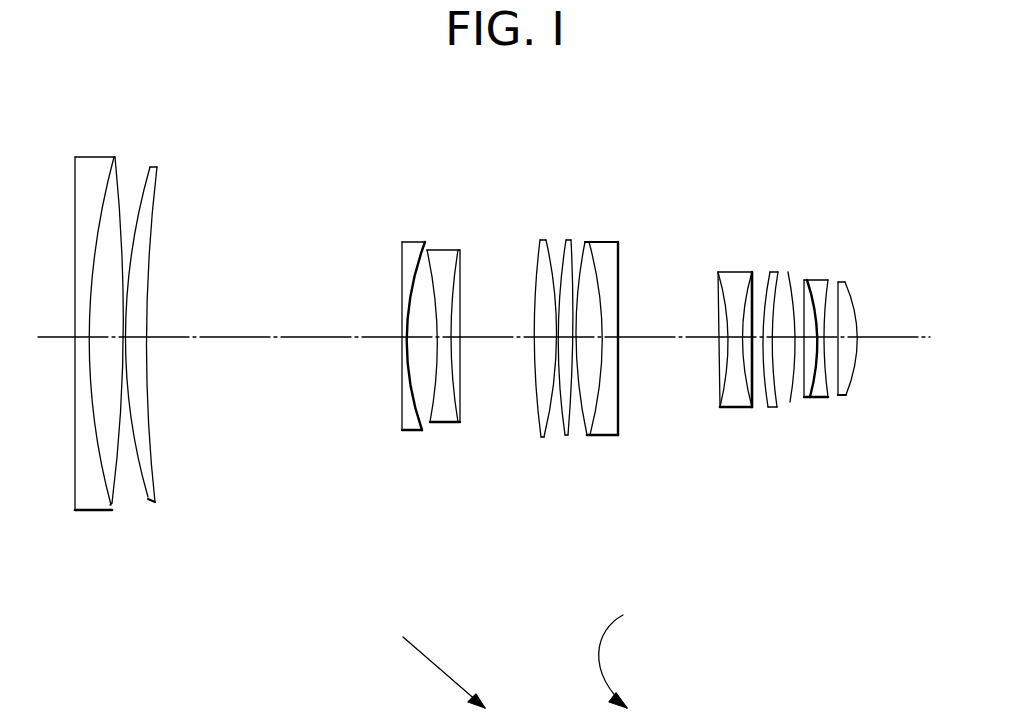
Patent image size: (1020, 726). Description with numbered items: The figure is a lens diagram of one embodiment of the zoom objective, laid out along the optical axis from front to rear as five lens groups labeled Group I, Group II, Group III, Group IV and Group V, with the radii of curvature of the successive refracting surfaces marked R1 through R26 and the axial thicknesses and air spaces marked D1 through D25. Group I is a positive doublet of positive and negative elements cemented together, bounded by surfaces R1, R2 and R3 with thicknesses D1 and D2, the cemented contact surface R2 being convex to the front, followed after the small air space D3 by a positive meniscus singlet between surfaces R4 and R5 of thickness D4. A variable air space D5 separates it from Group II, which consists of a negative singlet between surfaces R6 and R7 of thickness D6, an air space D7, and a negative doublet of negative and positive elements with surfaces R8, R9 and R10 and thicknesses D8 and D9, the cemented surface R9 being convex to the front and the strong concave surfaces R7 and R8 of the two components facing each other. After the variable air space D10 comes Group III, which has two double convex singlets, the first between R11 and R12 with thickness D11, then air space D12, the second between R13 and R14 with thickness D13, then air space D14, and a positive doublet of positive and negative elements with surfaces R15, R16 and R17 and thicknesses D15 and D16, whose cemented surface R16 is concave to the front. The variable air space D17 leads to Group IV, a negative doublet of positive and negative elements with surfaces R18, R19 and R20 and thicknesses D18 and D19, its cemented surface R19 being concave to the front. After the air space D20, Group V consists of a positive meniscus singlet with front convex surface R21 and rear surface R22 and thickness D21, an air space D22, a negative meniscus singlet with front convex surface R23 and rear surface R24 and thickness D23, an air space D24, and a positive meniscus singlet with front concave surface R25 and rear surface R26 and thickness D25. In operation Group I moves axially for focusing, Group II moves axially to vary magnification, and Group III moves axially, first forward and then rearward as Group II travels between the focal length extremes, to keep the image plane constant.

The Group I is at (73, 118).
The Group II is at (467, 197).
The Group III is at (627, 197).
The Group IV is at (743, 198).
The Group V is at (853, 198).
The first refracting surface R1 is at (76, 512).
The second refracting surface R2 is at (104, 512).
The third refracting surface R3 is at (113, 506).
The fourth refracting surface R4 is at (150, 505).
The fifth refracting surface R5 is at (158, 505).
The sixth refracting surface R6 is at (402, 411).
The seventh refracting surface R7 is at (421, 414).
The eighth refracting surface R8 is at (433, 411).
The ninth refracting surface R9 is at (447, 412).
The tenth refracting surface R10 is at (459, 417).
The eleventh refracting surface R11 is at (536, 425).
The twelfth refracting surface R12 is at (547, 421).
The thirteenth refracting surface R13 is at (560, 420).
The fourteenth refracting surface R14 is at (571, 420).
The fifteenth refracting surface R15 is at (584, 421).
The sixteenth refracting surface R16 is at (600, 421).
The seventeenth refracting surface R17 is at (616, 421).
The eighteenth refracting surface R18 is at (719, 409).
The nineteenth refracting surface R19 is at (750, 410).
The twentieth refracting surface R20 is at (766, 410).
The twenty-first refracting surface R21 is at (777, 410).
The twenty-second refracting surface R22 is at (791, 405).
The twenty-third refracting surface R23 is at (811, 400).
The twenty-fourth refracting surface R24 is at (828, 400).
The twenty-fifth refracting surface R25 is at (839, 398).
The twenty-sixth refracting surface R26 is at (853, 398).
The axial thickness D1 is at (82, 337).
The axial thickness D2 is at (121, 332).
The air space D3 is at (124, 324).
The axial thickness D4 is at (141, 337).
The variable air space D5 is at (280, 325).
The axial thickness D6 is at (404, 337).
The air space D7 is at (426, 324).
The axial thickness D8 is at (437, 336).
The axial thickness D9 is at (452, 330).
The variable air space D10 is at (497, 325).
The axial thickness D11 is at (547, 333).
The air space D12 is at (554, 345).
The axial thickness D13 is at (558, 343).
The air space D14 is at (576, 341).
The axial thickness D15 is at (595, 303).
The axial thickness D16 is at (611, 330).
The variable air space D17 is at (669, 325).
The axial thickness D18 is at (733, 337).
The axial thickness D19 is at (745, 345).
The air space D20 is at (768, 276).
The axial thickness D21 is at (794, 288).
The air space D22 is at (792, 285).
The axial thickness D23 is at (811, 345).
The air space D24 is at (834, 290).
The axial thickness D25 is at (847, 328).